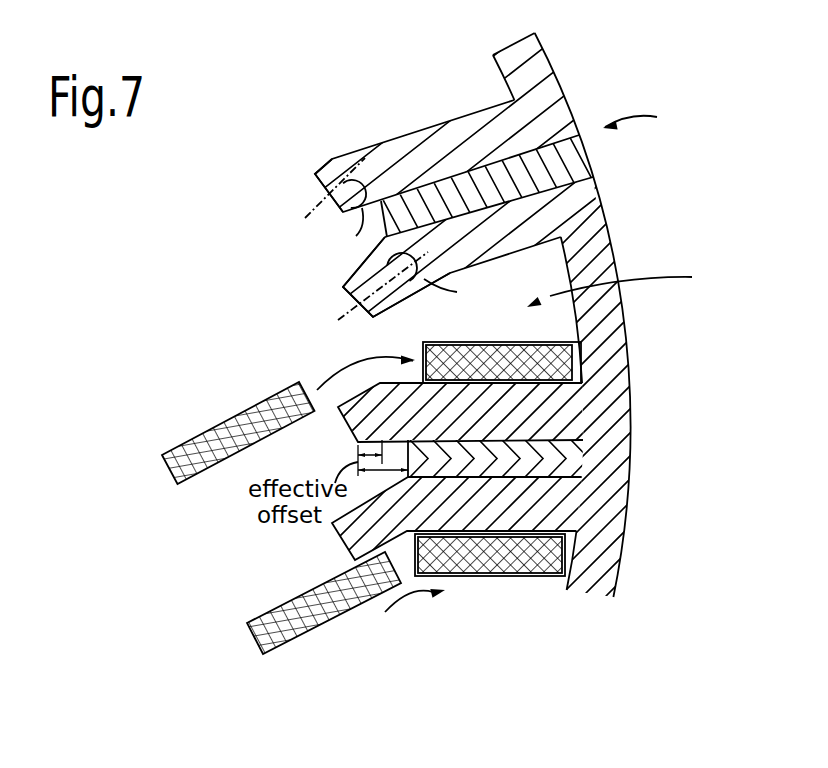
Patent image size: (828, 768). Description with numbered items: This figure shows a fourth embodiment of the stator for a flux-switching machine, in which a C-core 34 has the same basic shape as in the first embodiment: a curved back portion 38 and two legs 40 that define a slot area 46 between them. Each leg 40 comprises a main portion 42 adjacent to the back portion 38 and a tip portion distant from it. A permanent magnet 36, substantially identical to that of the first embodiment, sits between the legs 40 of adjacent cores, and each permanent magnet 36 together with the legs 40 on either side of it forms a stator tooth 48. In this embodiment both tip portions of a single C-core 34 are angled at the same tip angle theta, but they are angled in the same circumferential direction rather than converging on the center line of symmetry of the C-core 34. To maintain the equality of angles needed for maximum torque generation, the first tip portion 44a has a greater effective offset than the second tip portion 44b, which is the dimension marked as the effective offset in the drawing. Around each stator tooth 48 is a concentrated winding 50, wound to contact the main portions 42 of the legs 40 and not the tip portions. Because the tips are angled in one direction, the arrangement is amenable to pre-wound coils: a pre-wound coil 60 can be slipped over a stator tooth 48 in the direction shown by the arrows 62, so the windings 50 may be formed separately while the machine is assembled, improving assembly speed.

The C-core 34 is at (515, 503).
The permanent magnet 36 is at (575, 463).
The back portion 38 is at (587, 247).
The leg 40 is at (491, 138).
The main portion 42 is at (455, 173).
The first tip portion 44a is at (373, 278).
The second tip portion 44b is at (315, 174).
The slot area 46 is at (626, 286).
The stator tooth 48 is at (648, 117).
The concentrated winding 50 is at (543, 362).
The pre-wound coil 60 is at (297, 595).
The arrows 62 is at (337, 373).